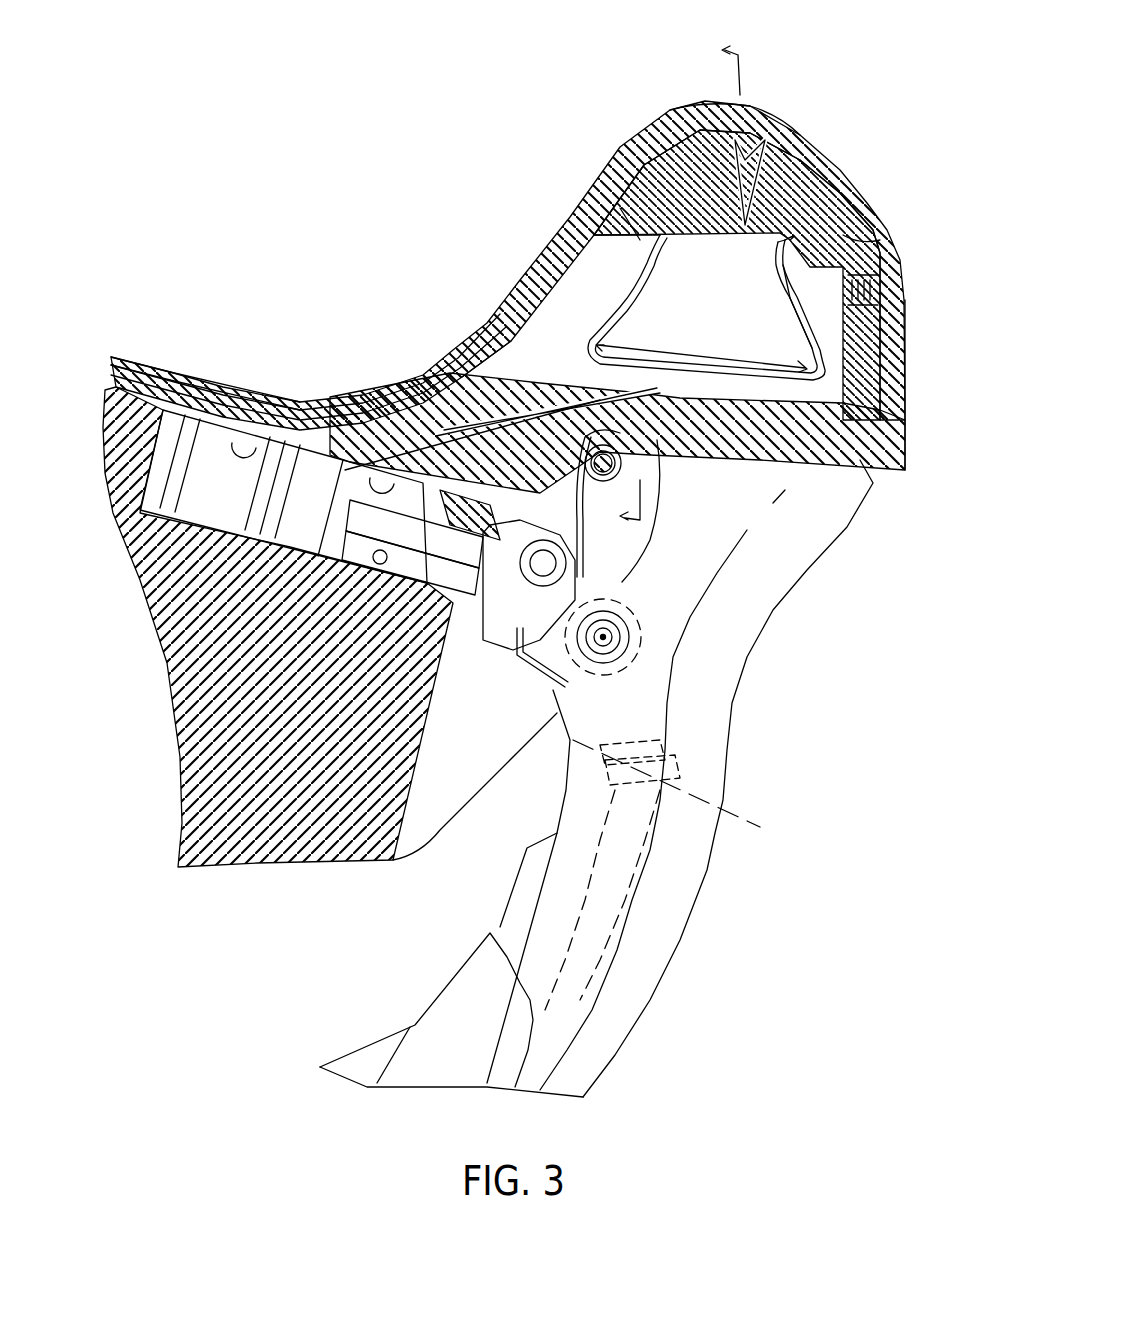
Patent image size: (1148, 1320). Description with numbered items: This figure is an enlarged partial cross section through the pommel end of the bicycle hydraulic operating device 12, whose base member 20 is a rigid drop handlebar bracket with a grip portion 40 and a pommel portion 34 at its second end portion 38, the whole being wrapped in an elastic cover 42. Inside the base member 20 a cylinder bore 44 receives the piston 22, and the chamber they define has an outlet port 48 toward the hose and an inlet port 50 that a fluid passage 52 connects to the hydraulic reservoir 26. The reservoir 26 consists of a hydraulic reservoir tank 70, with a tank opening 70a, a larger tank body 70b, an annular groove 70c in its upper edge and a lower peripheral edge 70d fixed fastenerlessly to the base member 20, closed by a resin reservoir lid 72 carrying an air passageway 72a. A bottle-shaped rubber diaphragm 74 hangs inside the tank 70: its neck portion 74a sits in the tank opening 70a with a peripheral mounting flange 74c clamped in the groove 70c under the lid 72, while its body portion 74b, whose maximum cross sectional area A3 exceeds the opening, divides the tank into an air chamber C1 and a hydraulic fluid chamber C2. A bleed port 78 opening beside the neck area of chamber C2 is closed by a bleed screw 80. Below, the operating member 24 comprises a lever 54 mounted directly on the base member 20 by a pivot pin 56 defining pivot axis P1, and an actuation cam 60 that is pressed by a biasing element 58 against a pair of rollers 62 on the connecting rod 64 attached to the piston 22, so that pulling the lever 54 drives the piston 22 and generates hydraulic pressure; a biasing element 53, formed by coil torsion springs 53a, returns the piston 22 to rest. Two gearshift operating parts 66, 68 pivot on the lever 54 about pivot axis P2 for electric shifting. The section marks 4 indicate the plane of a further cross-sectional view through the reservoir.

The bicycle hydraulic operating device 12 is at (234, 268).
The base member 20 is at (321, 878).
The piston 22 is at (337, 440).
The operating member 24 is at (632, 1045).
The hydraulic reservoir 26 is at (512, 292).
The pommel portion 34 is at (897, 473).
The second end portion 38 is at (465, 822).
The grip portion 40 is at (160, 378).
The cover 42 is at (222, 386).
The cylinder bore 44 is at (265, 417).
The outlet port 48 is at (376, 565).
The inlet port 50 is at (394, 465).
The fluid passage 52 is at (455, 440).
The biasing element 53 is at (598, 580).
The coil torsion springs 53a is at (670, 453).
The lever 54 is at (683, 968).
The pivot pin 56 is at (640, 655).
The biasing element 58 is at (528, 675).
The actuation cam 60 is at (476, 620).
The rollers 62 is at (540, 538).
The connecting rod 64 is at (400, 508).
The gearshift operating part 66 is at (445, 1075).
The gearshift operating part 68 is at (357, 1078).
The hydraulic reservoir tank 70 is at (898, 371).
The tank opening 70a is at (788, 290).
The tank body 70b is at (600, 240).
The annular groove 70c is at (620, 208).
The peripheral edge 70d is at (488, 375).
The reservoir lid 72 is at (650, 148).
The air passageway 72a is at (783, 123).
The diaphragm 74 is at (600, 292).
The neck portion 74a is at (780, 256).
The body portion 74b is at (805, 326).
The peripheral mounting flange 74c is at (843, 222).
The bleed port 78 is at (895, 303).
The bleed screw 80 is at (883, 256).
The cross sectional area A3 is at (630, 340).
The air chamber C1 is at (722, 320).
The hydraulic fluid chamber C2 is at (568, 359).
The pivot axis P1 is at (606, 637).
The pivot axis P2 is at (755, 828).
The section line for FIG. 4 is at (668, 277).